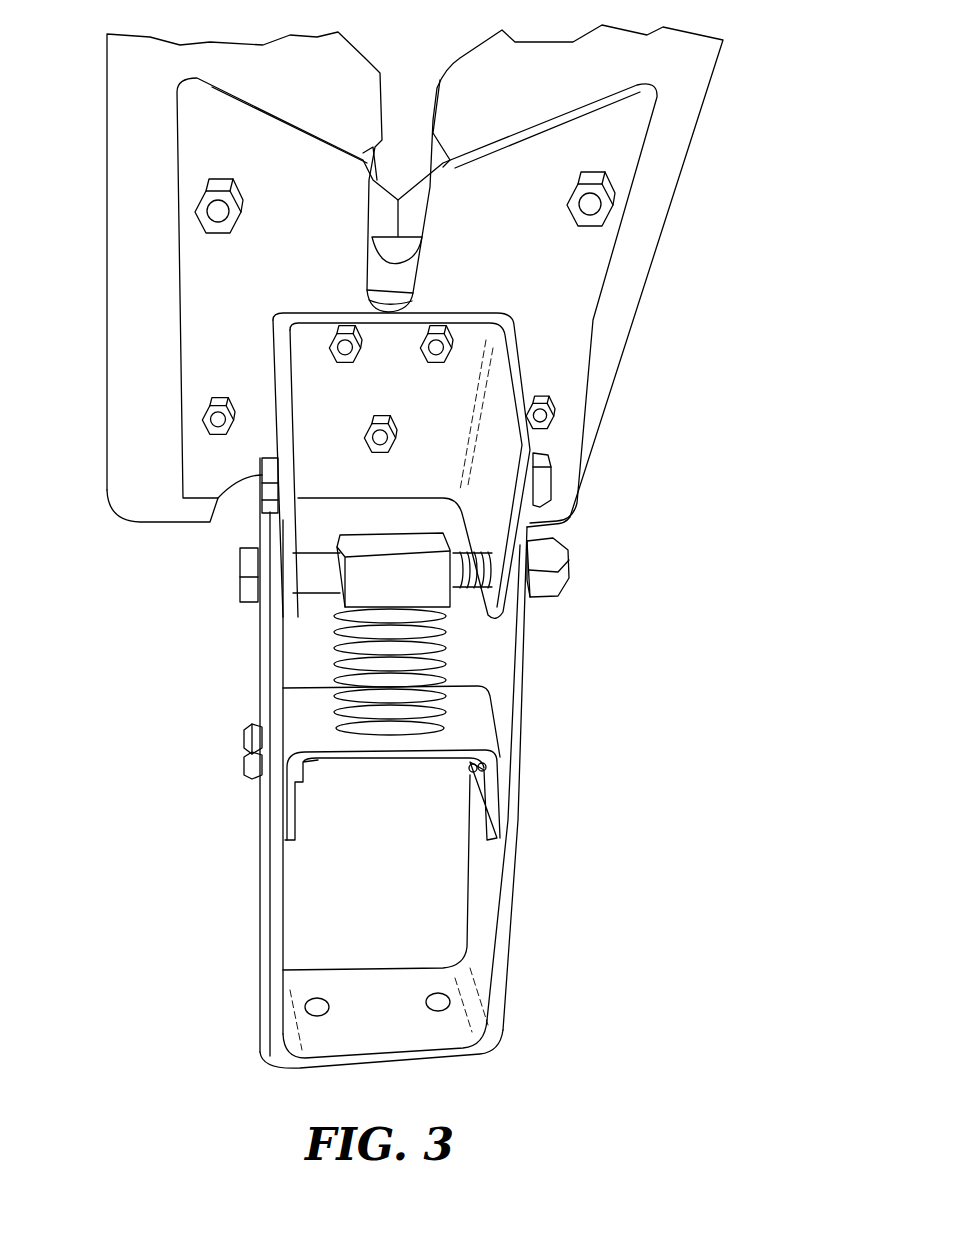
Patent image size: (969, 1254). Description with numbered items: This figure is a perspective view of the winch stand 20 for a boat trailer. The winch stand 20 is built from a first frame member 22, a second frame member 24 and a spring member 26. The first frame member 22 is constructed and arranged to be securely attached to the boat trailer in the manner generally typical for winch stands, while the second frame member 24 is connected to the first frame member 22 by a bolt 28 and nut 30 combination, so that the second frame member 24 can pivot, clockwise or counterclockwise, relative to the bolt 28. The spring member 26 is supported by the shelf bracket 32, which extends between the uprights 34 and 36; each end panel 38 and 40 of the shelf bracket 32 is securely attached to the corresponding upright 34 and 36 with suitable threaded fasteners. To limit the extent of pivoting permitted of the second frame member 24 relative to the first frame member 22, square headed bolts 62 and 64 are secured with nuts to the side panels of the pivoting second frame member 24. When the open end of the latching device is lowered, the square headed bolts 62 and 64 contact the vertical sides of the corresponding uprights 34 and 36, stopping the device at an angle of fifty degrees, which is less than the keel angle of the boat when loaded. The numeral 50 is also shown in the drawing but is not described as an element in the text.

The winch stand 20 is at (766, 115).
The first frame member 22 is at (262, 688).
The second frame member 24 is at (520, 380).
The spring member 26 is at (440, 672).
The bolt 28 is at (333, 575).
The nut 30 is at (548, 562).
The shelf bracket 32 is at (465, 717).
The upright 34 is at (263, 788).
The upright 36 is at (512, 812).
The end panel 38 is at (290, 828).
The end panel 40 is at (480, 790).
The block 50 is at (412, 545).
The square headed bolt 62 is at (560, 490).
The square headed bolt 64 is at (262, 508).